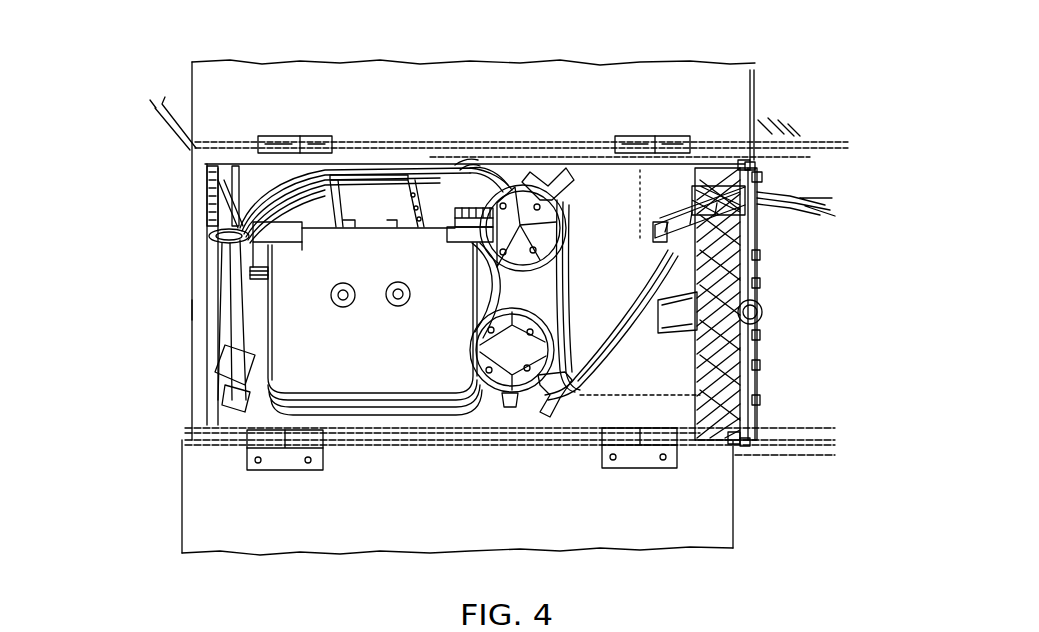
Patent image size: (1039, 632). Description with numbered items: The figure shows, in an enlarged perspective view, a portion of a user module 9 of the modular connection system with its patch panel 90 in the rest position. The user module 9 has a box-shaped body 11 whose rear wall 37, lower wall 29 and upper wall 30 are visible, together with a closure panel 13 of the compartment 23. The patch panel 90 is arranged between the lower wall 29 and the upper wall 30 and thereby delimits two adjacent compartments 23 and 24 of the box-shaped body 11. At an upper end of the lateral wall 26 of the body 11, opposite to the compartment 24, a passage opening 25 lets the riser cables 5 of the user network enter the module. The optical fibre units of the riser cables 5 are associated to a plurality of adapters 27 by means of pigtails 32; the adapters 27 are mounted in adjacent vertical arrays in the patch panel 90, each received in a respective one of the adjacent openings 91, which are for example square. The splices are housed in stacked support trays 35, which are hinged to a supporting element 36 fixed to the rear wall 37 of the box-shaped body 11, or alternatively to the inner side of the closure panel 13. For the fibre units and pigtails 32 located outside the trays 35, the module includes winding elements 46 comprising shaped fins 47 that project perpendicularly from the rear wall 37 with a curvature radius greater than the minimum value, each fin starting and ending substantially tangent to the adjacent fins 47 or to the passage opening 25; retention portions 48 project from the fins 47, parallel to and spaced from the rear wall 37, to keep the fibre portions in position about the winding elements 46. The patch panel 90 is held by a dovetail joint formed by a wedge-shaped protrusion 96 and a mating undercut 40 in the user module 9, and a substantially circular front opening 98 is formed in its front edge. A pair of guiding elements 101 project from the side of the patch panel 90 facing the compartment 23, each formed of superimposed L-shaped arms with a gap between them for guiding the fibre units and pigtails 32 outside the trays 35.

The riser cables 5 is at (163, 130).
The user module 9 is at (788, 102).
The box-shaped body 11 is at (188, 311).
The closure panel 13 is at (440, 114).
The compartment 23 is at (660, 187).
The compartment 24 is at (823, 345).
The passage opening 25 is at (228, 180).
The lateral wall 26 is at (213, 253).
The adapters 27 is at (750, 228).
The lower wall 29 is at (598, 413).
The upper wall 30 is at (618, 178).
The pigtails 32 is at (632, 318).
The support trays 35 is at (388, 415).
The supporting element 36 is at (370, 200).
The rear wall 37 is at (598, 217).
The undercut 40 is at (742, 165).
The winding elements 46 is at (549, 180).
The shaped fins 47 is at (530, 200).
The retention portions 48 is at (568, 178).
The patch panel 90 is at (762, 383).
The openings 91 is at (757, 180).
The wedge-shaped protrusion 96 is at (748, 165).
The front opening 98 is at (760, 307).
The guiding elements 101 is at (646, 231).